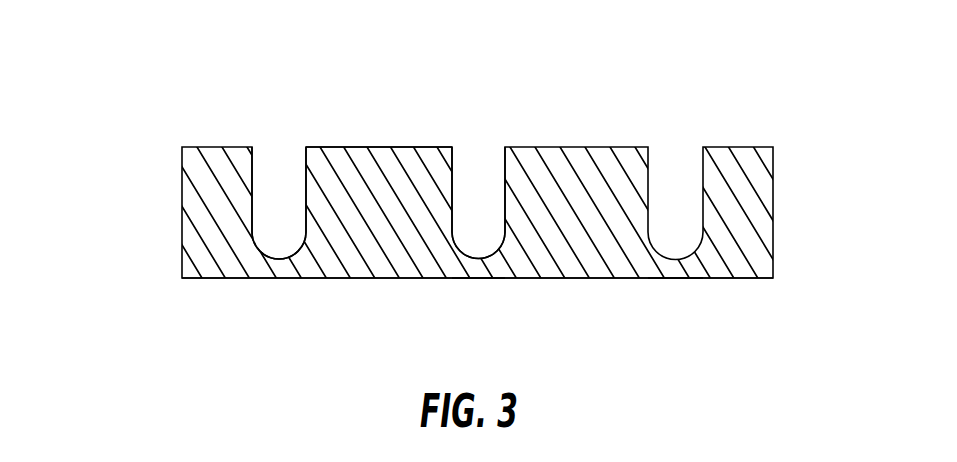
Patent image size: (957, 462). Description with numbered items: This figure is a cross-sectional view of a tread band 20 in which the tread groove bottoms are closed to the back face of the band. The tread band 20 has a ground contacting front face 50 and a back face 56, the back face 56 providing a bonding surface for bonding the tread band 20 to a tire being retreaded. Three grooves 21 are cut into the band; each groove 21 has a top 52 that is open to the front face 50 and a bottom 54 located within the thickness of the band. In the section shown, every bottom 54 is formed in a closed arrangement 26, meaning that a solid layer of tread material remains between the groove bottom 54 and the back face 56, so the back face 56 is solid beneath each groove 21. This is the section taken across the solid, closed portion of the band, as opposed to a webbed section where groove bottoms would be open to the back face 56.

The tread band 20 is at (150, 203).
The groove 21 is at (277, 182).
The front face 50 is at (367, 148).
The top 52 is at (477, 182).
The closed arrangement 26 is at (480, 259).
The bottom 54 is at (673, 259).
The back face 56 is at (772, 278).